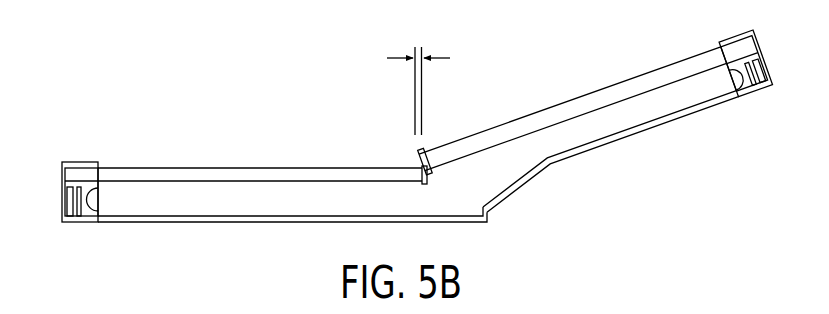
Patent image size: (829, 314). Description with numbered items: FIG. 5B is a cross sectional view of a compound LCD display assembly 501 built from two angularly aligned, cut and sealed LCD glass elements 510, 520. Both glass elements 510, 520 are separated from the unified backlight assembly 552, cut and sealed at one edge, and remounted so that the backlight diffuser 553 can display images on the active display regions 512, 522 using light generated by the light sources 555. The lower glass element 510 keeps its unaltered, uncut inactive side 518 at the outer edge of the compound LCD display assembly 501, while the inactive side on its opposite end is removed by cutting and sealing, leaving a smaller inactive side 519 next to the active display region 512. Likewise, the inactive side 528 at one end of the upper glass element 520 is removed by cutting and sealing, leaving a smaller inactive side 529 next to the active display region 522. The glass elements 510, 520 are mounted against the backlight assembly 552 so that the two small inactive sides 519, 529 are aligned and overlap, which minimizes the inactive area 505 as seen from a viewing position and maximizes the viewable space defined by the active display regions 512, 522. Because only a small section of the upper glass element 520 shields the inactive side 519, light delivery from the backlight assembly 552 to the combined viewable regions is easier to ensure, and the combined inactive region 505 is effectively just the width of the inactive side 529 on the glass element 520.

The compound LCD display assembly 501 is at (150, 67).
The inactive area 505 is at (445, 57).
The LCD glass element 510 is at (278, 169).
The active display region 512 is at (138, 172).
The inactive side 518 is at (83, 178).
The smaller inactive side 519 is at (421, 175).
The LCD glass element 520 is at (624, 79).
The active display region 522 is at (545, 108).
The inactive side 528 is at (737, 47).
The smaller inactive side 529 is at (421, 152).
The unified backlight assembly 552 is at (340, 200).
The backlight diffuser 553 is at (488, 185).
The light sources 555 is at (99, 199).